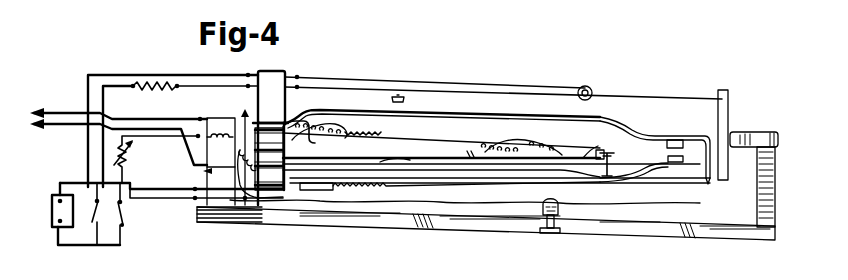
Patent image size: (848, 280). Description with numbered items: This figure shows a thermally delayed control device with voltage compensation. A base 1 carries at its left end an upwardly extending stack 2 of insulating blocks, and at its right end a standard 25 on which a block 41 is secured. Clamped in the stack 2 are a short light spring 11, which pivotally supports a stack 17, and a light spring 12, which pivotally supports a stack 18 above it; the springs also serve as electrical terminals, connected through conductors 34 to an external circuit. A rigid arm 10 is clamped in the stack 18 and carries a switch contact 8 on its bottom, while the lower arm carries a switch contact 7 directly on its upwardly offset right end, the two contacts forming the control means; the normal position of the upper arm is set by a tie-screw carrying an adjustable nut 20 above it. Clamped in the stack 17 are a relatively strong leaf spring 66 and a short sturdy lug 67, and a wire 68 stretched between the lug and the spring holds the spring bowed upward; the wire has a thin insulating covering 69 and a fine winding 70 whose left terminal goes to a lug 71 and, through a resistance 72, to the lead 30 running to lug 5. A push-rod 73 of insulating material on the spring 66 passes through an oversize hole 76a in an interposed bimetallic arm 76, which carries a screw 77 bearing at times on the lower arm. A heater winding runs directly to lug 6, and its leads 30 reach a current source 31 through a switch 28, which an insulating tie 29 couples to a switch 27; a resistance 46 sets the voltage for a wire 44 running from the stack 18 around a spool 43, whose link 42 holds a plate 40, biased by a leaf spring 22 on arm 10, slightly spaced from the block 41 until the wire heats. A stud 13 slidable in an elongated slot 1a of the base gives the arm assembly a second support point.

The base 1 is at (368, 226).
The elongated slot 1a is at (436, 232).
The stack of insulating blocks 2 is at (221, 117).
The lug 5 is at (214, 222).
The lug 6 is at (236, 205).
The switch contact 7 is at (684, 158).
The switch contact 8 is at (684, 145).
The arm 10 is at (452, 82).
The spring 11 is at (192, 168).
The spring 12 is at (205, 116).
The stud 13 is at (565, 218).
The stack 17 is at (247, 157).
The stack 18 is at (288, 70).
The adjustable nut 20 is at (398, 96).
The leaf spring 22 is at (709, 185).
The standard 25 is at (771, 176).
The switch 27 is at (90, 220).
The switch 28 is at (124, 225).
The insulating tie 29 is at (112, 220).
The leads 30 is at (163, 183).
The current source 31 is at (52, 210).
The conductors 34 is at (60, 112).
The plate 40 is at (729, 115).
The block 41 is at (750, 131).
The link 42 is at (666, 96).
The spool 43 is at (586, 86).
The wire 44 is at (506, 90).
The resistance 46 is at (153, 92).
The leaf spring 66 is at (432, 155).
The lug 67 is at (308, 139).
The wire 68 is at (357, 141).
The insulating covering 69 is at (465, 145).
The winding 70 is at (497, 146).
The lug 71 is at (285, 108).
The resistance 72 is at (130, 152).
The push-rod 73 is at (603, 127).
The arm 76 is at (606, 152).
The oversize hole 76a is at (600, 146).
The screw 77 is at (614, 158).